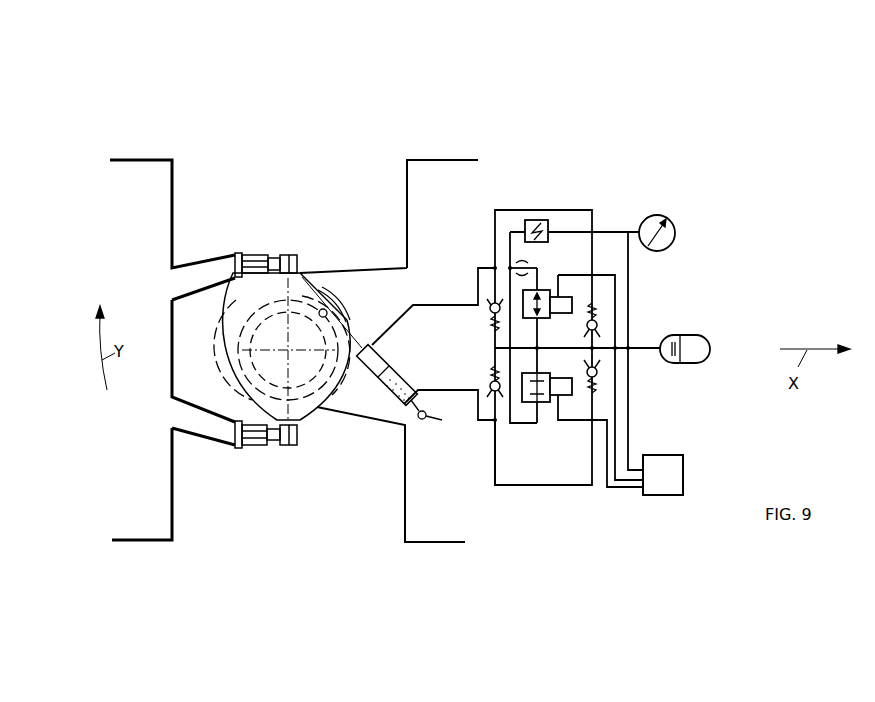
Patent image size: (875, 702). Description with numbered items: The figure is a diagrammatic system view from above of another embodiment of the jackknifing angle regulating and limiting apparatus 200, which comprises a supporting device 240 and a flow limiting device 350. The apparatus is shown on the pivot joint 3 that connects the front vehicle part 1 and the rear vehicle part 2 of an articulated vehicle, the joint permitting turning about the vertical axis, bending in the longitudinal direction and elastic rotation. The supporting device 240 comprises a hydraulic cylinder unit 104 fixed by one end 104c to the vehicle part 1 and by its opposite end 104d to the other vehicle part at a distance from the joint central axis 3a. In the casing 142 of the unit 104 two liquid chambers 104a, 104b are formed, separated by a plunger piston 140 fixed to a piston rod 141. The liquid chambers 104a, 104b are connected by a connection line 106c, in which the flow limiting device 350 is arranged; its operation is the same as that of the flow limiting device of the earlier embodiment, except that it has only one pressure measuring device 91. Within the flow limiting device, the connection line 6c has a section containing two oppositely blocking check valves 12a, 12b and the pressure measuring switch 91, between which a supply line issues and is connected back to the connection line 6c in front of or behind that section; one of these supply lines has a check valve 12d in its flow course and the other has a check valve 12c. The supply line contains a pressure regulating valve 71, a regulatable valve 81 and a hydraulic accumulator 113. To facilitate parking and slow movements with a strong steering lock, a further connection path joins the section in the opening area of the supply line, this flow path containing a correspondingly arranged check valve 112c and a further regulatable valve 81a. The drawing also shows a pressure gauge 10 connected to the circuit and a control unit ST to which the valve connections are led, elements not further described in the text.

The front vehicle part 1 is at (418, 170).
The rear vehicle part 2 is at (132, 172).
The pivot joint 3 is at (270, 323).
The joint central axis 3a is at (283, 352).
The connection line 6c is at (440, 387).
The pressure gauge 10 is at (675, 222).
The check valve 12a is at (613, 318).
The check valve 12b is at (613, 372).
The check valve 12c is at (475, 375).
The check valve 12d is at (480, 317).
The pressure regulating valve 71 is at (528, 268).
The regulatable valve 81 is at (572, 302).
The further regulatable valve 81a is at (572, 388).
The pressure measuring switch 91 is at (535, 220).
The hydraulic cylinder unit 104 is at (352, 403).
The liquid chamber 104a is at (442, 420).
The liquid chamber 104b is at (373, 320).
The end of hydraulic cylinder unit 104c is at (420, 420).
The opposite end of hydraulic cylinder unit 104d is at (322, 292).
The connection line 106c is at (437, 307).
The check valve 112c is at (527, 530).
The hydraulic accumulator 113 is at (690, 338).
The plunger piston 140 is at (357, 378).
The piston rod 141 is at (342, 327).
The casing 142 is at (393, 400).
The jackknifing angle regulating and limiting apparatus 200 is at (445, 65).
The supporting device 240 is at (274, 98).
The flow limiting device 350 is at (640, 110).
The control unit ST is at (690, 461).